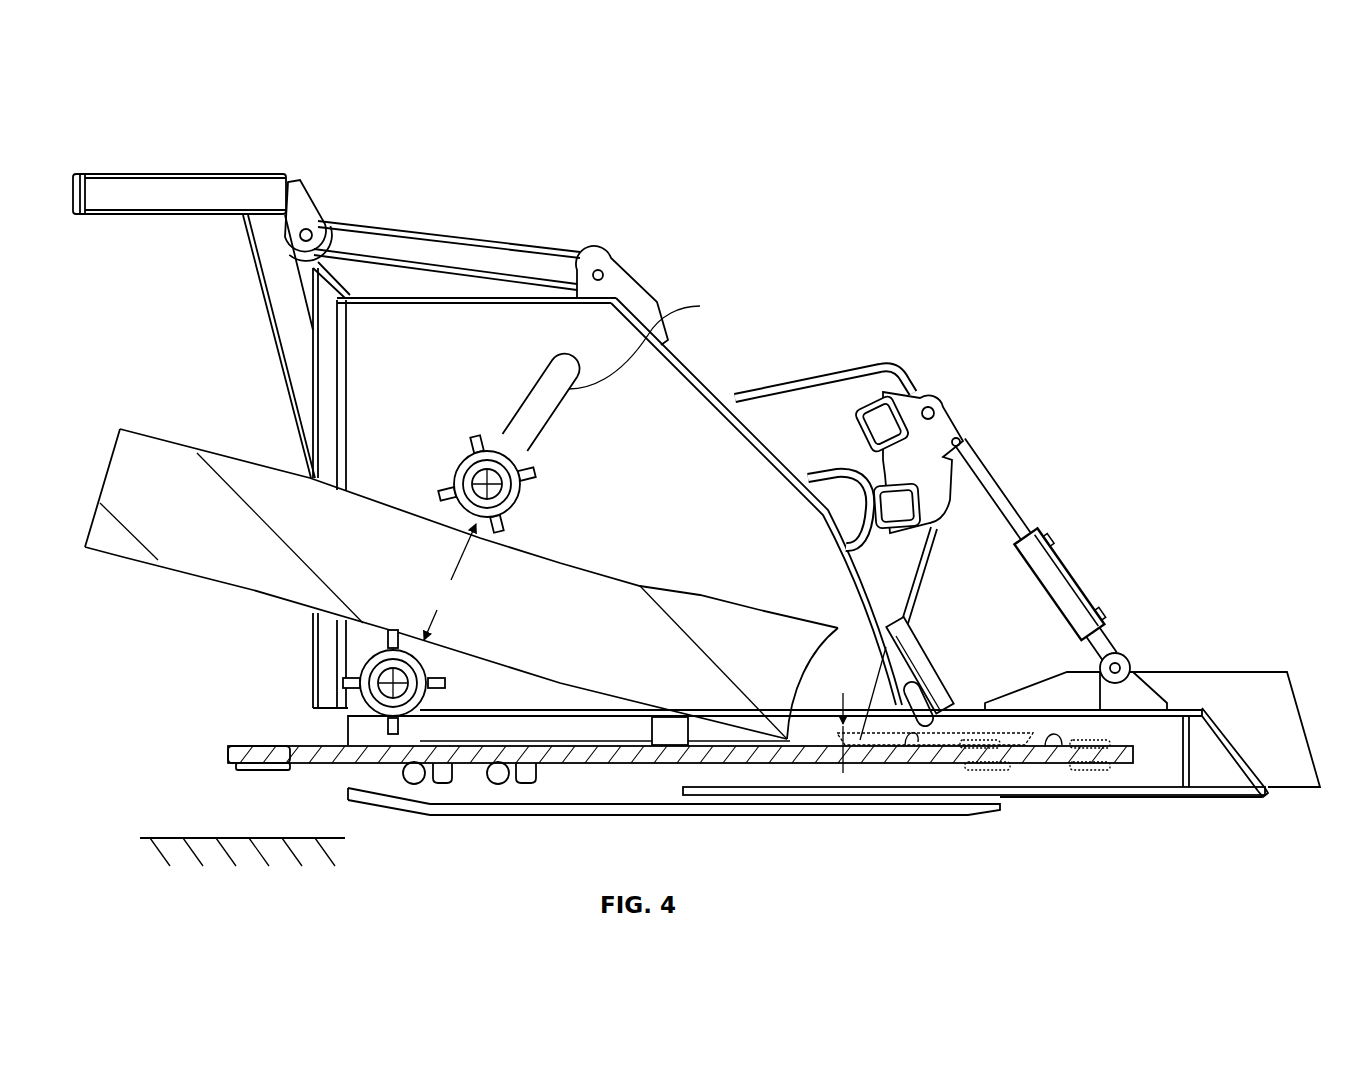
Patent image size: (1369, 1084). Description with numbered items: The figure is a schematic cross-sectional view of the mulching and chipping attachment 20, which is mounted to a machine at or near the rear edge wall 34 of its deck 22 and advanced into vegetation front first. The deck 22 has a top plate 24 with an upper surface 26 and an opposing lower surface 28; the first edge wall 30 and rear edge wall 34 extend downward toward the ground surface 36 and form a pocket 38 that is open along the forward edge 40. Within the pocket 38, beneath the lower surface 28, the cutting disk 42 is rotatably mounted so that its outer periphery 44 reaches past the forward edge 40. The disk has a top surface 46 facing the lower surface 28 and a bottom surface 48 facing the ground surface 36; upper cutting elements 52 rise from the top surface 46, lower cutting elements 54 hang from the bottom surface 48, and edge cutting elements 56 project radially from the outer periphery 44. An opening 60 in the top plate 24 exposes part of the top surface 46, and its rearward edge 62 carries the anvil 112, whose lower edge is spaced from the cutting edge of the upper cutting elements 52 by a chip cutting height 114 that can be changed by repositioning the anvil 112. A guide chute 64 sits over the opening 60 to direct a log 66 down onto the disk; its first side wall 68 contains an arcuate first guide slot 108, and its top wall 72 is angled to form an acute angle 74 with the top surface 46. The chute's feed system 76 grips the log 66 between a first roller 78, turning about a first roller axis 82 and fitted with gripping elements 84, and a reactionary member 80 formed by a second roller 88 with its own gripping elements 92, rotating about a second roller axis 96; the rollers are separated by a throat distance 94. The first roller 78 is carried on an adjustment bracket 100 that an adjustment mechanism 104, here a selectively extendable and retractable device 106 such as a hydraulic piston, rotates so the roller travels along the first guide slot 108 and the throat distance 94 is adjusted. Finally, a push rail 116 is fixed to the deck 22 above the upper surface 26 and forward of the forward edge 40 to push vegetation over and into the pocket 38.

The mulching and chipping attachment 20 is at (890, 166).
The deck 22 is at (1076, 698).
The top plate 24 is at (1153, 714).
The upper surface 26 is at (1198, 706).
The lower surface 28 is at (1168, 792).
The first edge wall 30 is at (597, 803).
The rear edge wall 34 is at (1238, 746).
The ground surface 36 is at (178, 837).
The pocket 38 is at (391, 776).
The forward edge 40 is at (348, 730).
The cutting disk 42 is at (790, 766).
The outer periphery 44 is at (236, 757).
The top surface 46 is at (1072, 772).
The bottom surface 48 is at (1000, 772).
The upper cutting elements 52 is at (532, 740).
The lower cutting elements 54 is at (437, 784).
The edge cutting elements 56 is at (265, 771).
The opening 60 is at (626, 722).
The rearward edge 62 is at (930, 690).
The guide chute 64 is at (457, 292).
The log 66 is at (150, 437).
The first side wall 68 is at (408, 330).
The top wall 72 is at (526, 296).
The acute angle 74 is at (860, 614).
The feed system 76 is at (500, 485).
The first roller 78 is at (521, 486).
The reactionary member 80 is at (375, 656).
The first roller axis 82 is at (507, 462).
The gripping elements 84 is at (486, 522).
The second roller 88 is at (375, 635).
The gripping elements 92 is at (392, 648).
The throat distance 94 is at (450, 582).
The second roller axis 96 is at (400, 676).
The adjustment bracket 100 is at (855, 380).
The adjustment mechanism 104 is at (1008, 484).
The selectively extendable and retractable device 106 is at (1060, 584).
The first guide slot 108 is at (676, 310).
The anvil 112 is at (912, 748).
The chip cutting height 114 is at (848, 772).
The push rail 116 is at (258, 190).